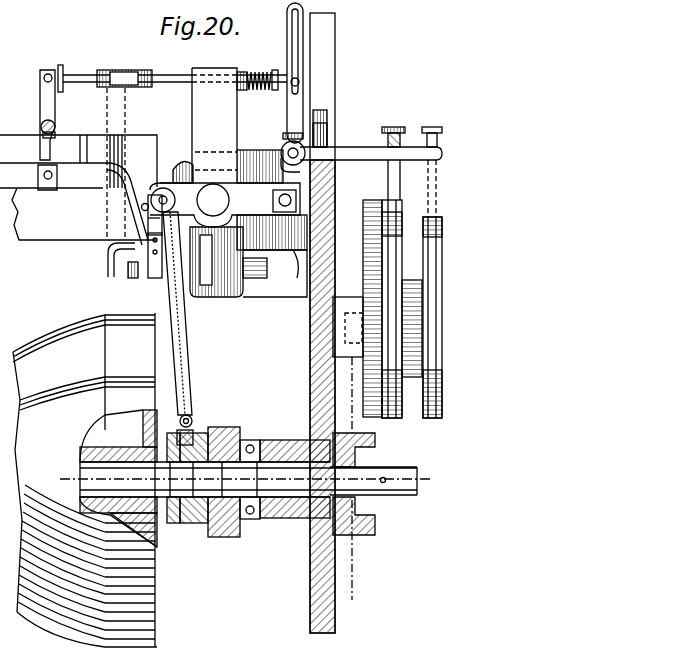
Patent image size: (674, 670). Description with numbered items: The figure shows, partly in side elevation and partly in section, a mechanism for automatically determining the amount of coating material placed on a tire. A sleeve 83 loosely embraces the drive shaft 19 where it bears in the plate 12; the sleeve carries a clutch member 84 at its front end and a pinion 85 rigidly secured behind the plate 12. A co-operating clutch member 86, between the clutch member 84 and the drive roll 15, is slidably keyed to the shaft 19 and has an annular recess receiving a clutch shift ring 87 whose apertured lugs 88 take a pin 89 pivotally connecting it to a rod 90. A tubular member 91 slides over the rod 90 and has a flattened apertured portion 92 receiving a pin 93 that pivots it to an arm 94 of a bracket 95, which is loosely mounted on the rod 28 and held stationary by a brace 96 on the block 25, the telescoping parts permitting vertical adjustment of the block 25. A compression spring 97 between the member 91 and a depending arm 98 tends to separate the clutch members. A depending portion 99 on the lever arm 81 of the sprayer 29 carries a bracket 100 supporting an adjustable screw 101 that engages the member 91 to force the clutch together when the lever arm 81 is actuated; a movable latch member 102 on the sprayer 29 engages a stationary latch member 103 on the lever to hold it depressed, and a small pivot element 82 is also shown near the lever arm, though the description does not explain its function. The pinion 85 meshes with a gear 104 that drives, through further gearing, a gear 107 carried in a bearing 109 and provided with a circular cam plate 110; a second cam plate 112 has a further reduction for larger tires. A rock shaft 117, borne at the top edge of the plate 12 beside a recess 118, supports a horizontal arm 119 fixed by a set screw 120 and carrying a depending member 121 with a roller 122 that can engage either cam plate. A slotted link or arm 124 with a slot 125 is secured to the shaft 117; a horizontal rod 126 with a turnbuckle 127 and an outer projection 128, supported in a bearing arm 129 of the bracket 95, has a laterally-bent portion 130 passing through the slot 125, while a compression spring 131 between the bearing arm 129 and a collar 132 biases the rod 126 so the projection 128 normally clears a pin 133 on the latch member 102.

The plate 12 is at (336, 110).
The drive roll 15 is at (158, 619).
The drive shaft 19 is at (401, 496).
The block 25 is at (275, 274).
The rod 28 is at (213, 194).
The sprayer 29 is at (56, 240).
The lever arm 81 is at (92, 128).
The pin 82 is at (141, 207).
The sleeve 83 is at (282, 519).
The clutch member 84 is at (227, 538).
The pinion 85 is at (360, 528).
The clutch member 86 is at (172, 433).
The clutch shift ring 87 is at (191, 432).
The apertured lugs 88 is at (196, 420).
The pin 89 is at (189, 414).
The rod 90 is at (186, 350).
The tubular member 91 is at (183, 330).
The flattened apertured portion 92 is at (148, 219).
The pin 93 is at (155, 192).
The arm 94 is at (181, 180).
The bracket 95 is at (200, 122).
The brace 96 is at (292, 200).
The compression spring 97 is at (212, 285).
The depending arm 98 is at (258, 262).
The depending portion 99 is at (148, 233).
The bracket 100 is at (152, 279).
The adjustable screw 101 is at (128, 272).
The movable latch member 102 is at (40, 100).
The stationary latch member 103 is at (53, 124).
The gear 104 is at (355, 586).
The gear 107 is at (364, 256).
The bearing 109 is at (344, 306).
The cam plate 110 is at (391, 420).
The cam plate 112 is at (432, 420).
The rock shaft 117 is at (284, 148).
The recess 118 is at (330, 128).
The arm 119 is at (358, 150).
The set screw 120 is at (288, 133).
The depending member 121 is at (392, 180).
The roller 122 is at (430, 210).
The link or arm 124 is at (288, 44).
The slot 125 is at (289, 16).
The horizontal rod 126 is at (173, 78).
The turnbuckle 127 is at (138, 72).
The projection 128 is at (61, 68).
The bearing arm 129 is at (192, 104).
The laterally-bent portion 130 is at (291, 88).
The compression spring 131 is at (246, 72).
The collar 132 is at (275, 70).
The pin 133 is at (44, 78).